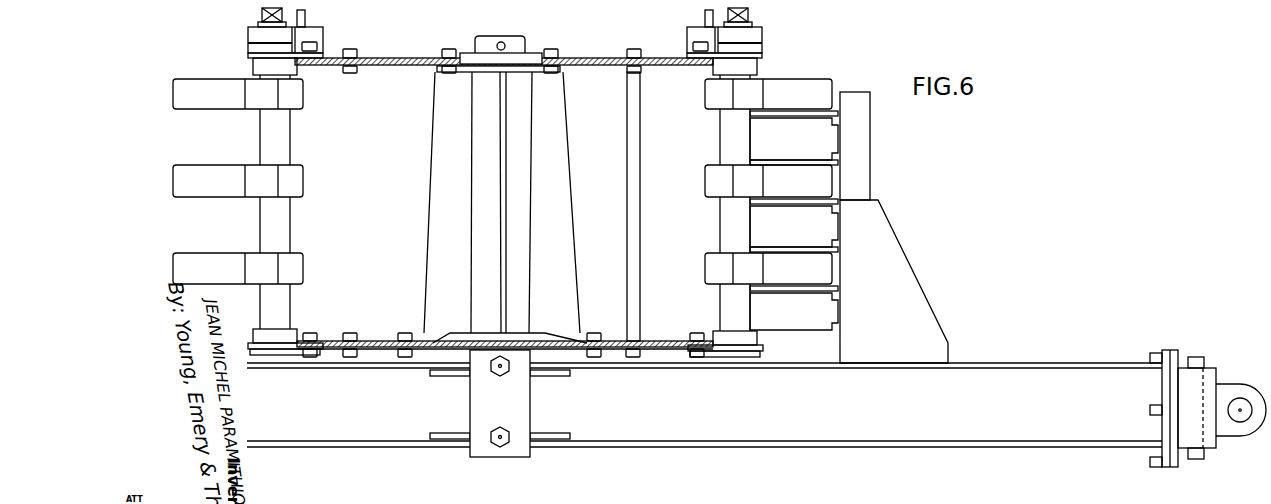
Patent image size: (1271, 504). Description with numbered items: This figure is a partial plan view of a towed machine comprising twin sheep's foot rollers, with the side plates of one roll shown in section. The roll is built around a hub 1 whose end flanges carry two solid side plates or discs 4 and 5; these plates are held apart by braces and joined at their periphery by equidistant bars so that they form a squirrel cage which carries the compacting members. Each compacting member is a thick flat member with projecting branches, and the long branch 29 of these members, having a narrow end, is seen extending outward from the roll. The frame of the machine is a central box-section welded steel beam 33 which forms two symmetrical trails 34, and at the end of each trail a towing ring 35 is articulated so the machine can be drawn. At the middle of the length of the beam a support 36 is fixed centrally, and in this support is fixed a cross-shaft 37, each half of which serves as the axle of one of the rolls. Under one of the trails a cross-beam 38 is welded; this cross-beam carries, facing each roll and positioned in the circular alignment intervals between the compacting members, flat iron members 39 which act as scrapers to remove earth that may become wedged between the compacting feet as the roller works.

The hub 1 is at (517, 195).
The side plate 4 is at (612, 340).
The side plate 5 is at (593, 62).
The long branch 29 is at (202, 190).
The central box-section welded steel beam 33 is at (592, 443).
The trail 34 is at (1020, 383).
The towing ring 35 is at (1225, 398).
The support 36 is at (517, 402).
The cross-shaft 37 is at (518, 48).
The cross-beam 38 is at (857, 196).
The flat iron member 39 is at (798, 115).